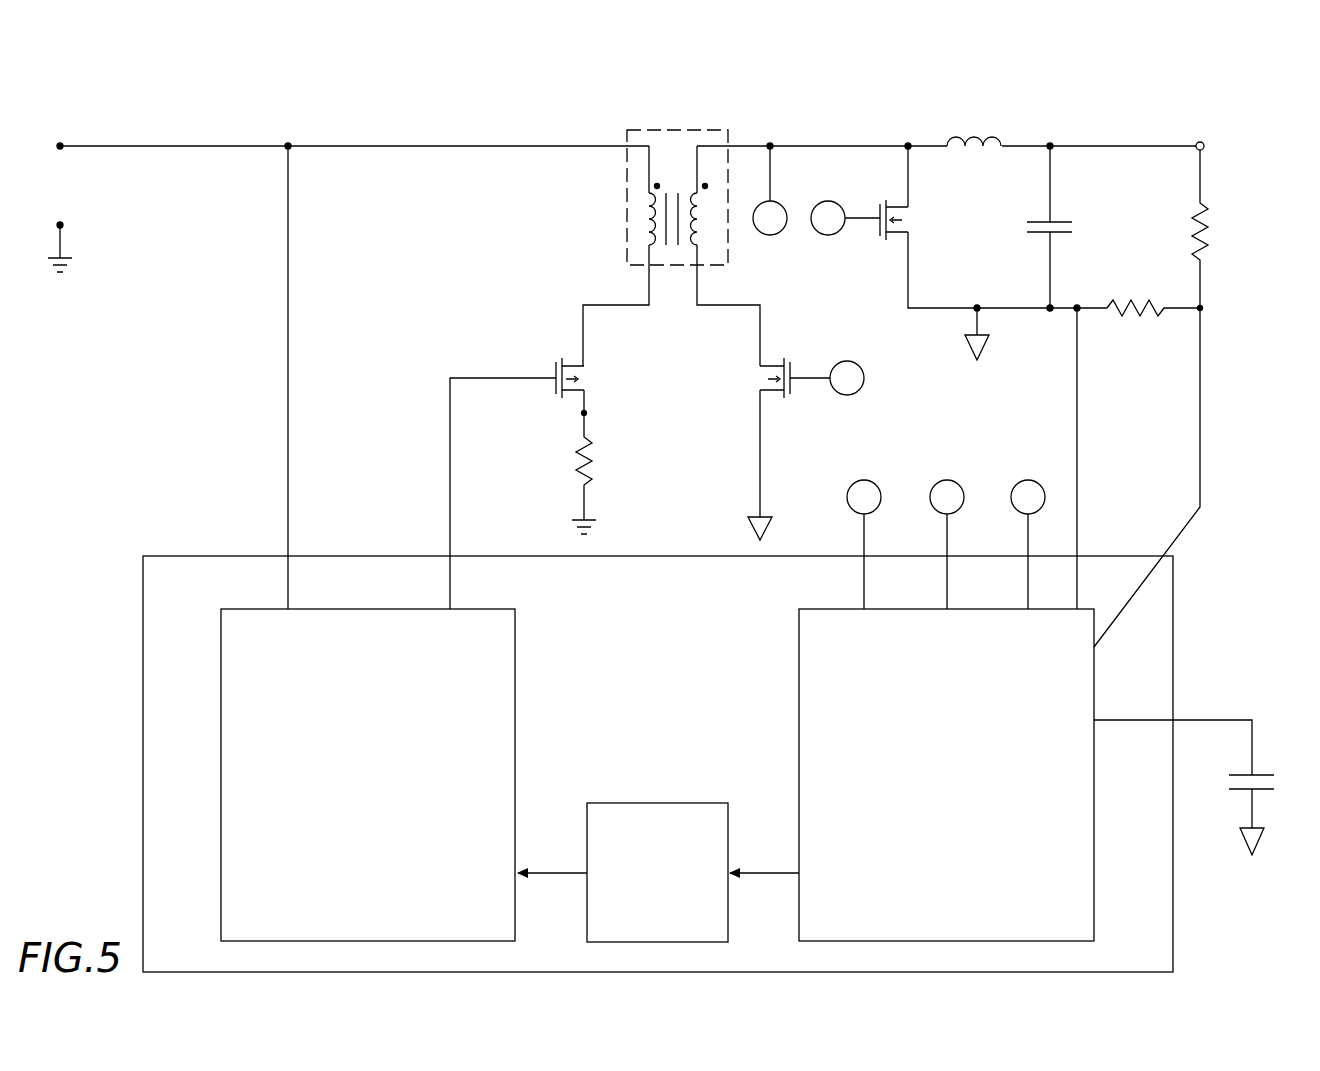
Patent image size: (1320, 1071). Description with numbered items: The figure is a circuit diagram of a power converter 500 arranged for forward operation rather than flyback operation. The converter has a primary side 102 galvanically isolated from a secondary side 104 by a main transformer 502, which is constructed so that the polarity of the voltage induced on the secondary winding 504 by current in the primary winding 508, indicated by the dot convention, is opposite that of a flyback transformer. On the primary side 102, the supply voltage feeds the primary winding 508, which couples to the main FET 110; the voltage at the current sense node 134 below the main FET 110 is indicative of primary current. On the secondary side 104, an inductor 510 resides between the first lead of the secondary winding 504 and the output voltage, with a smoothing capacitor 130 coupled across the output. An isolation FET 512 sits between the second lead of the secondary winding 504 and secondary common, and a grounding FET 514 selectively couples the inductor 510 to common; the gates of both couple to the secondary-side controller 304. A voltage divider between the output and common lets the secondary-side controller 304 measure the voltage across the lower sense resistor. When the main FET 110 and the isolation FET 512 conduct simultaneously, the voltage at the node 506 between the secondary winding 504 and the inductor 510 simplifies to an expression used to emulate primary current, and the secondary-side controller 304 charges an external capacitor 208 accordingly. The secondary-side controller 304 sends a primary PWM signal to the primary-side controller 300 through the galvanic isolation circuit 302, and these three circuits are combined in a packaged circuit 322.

The power converter 500 is at (82, 116).
The primary side 102 is at (338, 112).
The main transformer 502 is at (666, 217).
The primary winding 508 is at (648, 222).
The secondary winding 504 is at (700, 226).
The node 506 is at (772, 146).
The secondary side 104 is at (1114, 351).
The inductor 510 is at (1000, 136).
The smoothing capacitor 130 is at (1044, 222).
The grounding FET 514 is at (896, 250).
The isolation FET 512 is at (752, 370).
The main FET 110 is at (602, 372).
The current sense node 134 is at (582, 413).
The packaged circuit 322 is at (712, 726).
The primary-side controller 300 is at (368, 775).
The secondary-side controller 304 is at (946, 710).
The galvanic isolation circuit 302 is at (658, 872).
The external capacitor 208 is at (1254, 775).